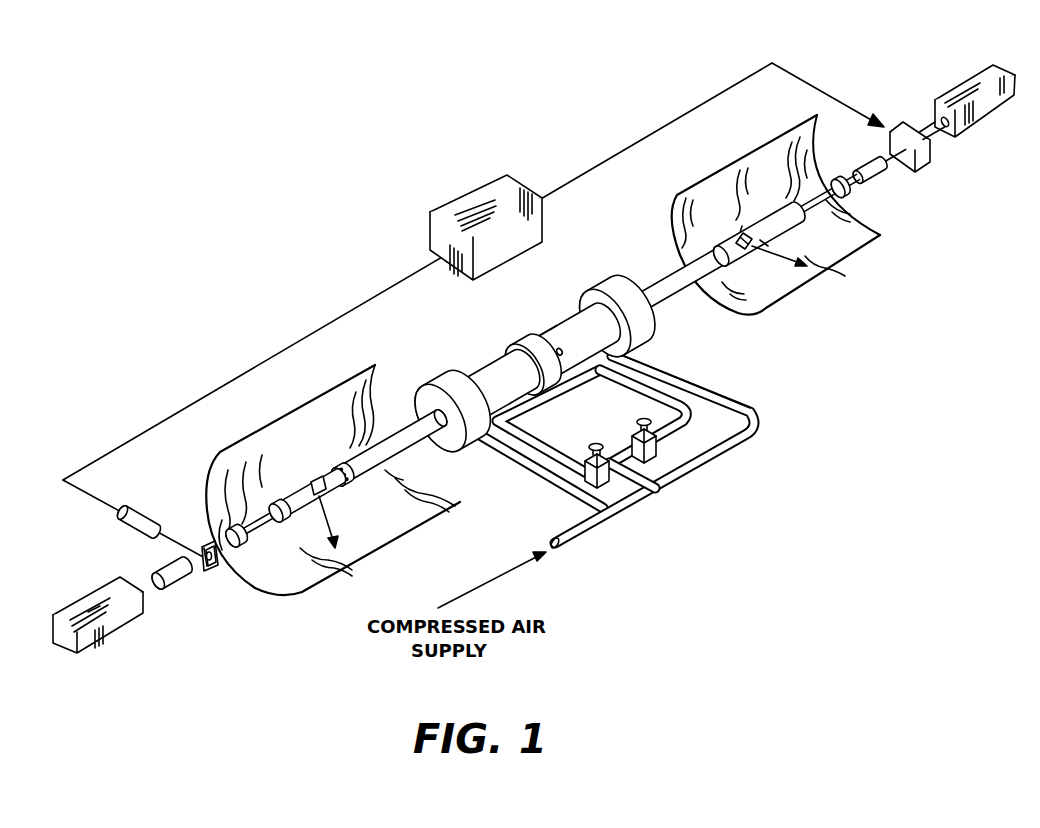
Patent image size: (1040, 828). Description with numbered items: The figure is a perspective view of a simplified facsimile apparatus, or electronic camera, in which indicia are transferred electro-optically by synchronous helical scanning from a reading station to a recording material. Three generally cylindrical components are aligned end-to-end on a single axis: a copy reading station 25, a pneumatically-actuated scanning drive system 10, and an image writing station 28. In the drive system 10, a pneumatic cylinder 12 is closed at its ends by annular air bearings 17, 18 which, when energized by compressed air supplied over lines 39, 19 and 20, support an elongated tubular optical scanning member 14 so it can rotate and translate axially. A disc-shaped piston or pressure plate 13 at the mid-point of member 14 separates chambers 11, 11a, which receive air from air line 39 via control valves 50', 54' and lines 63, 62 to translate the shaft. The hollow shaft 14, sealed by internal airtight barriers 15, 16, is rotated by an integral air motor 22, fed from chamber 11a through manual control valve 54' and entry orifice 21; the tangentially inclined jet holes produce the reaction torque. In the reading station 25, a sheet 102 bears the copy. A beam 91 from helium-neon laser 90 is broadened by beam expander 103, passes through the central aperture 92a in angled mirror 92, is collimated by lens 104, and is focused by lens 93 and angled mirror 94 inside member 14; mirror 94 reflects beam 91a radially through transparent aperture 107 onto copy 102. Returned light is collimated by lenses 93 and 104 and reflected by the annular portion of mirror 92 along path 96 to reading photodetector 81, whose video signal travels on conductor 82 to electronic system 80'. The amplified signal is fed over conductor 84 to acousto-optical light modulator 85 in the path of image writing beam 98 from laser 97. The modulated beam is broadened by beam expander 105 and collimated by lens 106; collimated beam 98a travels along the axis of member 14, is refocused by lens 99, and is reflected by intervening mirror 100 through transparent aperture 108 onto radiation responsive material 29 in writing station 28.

The pneumatically-actuated scanning drive system 10 is at (566, 289).
The chamber 11 is at (486, 370).
The chamber 11a is at (540, 334).
The pneumatic cylinder 12 is at (556, 326).
The disc-shaped piston or pressure plate 13 is at (510, 350).
The tubular optical scanning member 14 is at (666, 286).
The internal airtight barrier 15 is at (338, 464).
The internal airtight barrier 16 is at (721, 239).
The annular air bearing 17 is at (442, 393).
The annular air bearing 18 is at (606, 298).
The air line 19 is at (484, 454).
The air line 20 is at (650, 352).
The entry orifice 21 is at (560, 358).
The integral air motor 22 is at (352, 463).
The copy reading station 25 is at (315, 402).
The image writing station 28 is at (761, 146).
The radiation responsive material 29 is at (836, 268).
The air line 39 is at (558, 534).
The control valve 50' is at (628, 484).
The manual control valve 54' is at (667, 441).
The air line 62 is at (639, 394).
The air line 63 is at (526, 433).
The electronic system 80' is at (486, 214).
The reading photodetector 81 is at (124, 524).
The conductor 82 is at (390, 284).
The conductor 84 is at (611, 162).
The acousto-optical light modulator 85 is at (922, 170).
The helium-neon laser 90 is at (111, 640).
The beam of copy reading radiation 91 is at (134, 581).
The reflected beam 91a is at (318, 524).
The angled mirror 92 is at (211, 572).
The central aperture 92a is at (204, 544).
The lens 93 is at (282, 524).
The angled mirror 94 is at (315, 482).
The path 96 is at (200, 552).
The laser 97 is at (992, 122).
The image writing radiation beam 98 is at (930, 129).
The collimated beam 98a is at (785, 251).
The lens 99 is at (787, 201).
The intervening mirror 100 is at (740, 224).
The copy sheet 102 is at (342, 578).
The beam expander 103 is at (178, 588).
The lens 104 is at (236, 526).
The beam expander 105 is at (880, 179).
The lens 106 is at (848, 198).
The transparent aperture 107 is at (331, 504).
The transparent aperture 108 is at (762, 252).